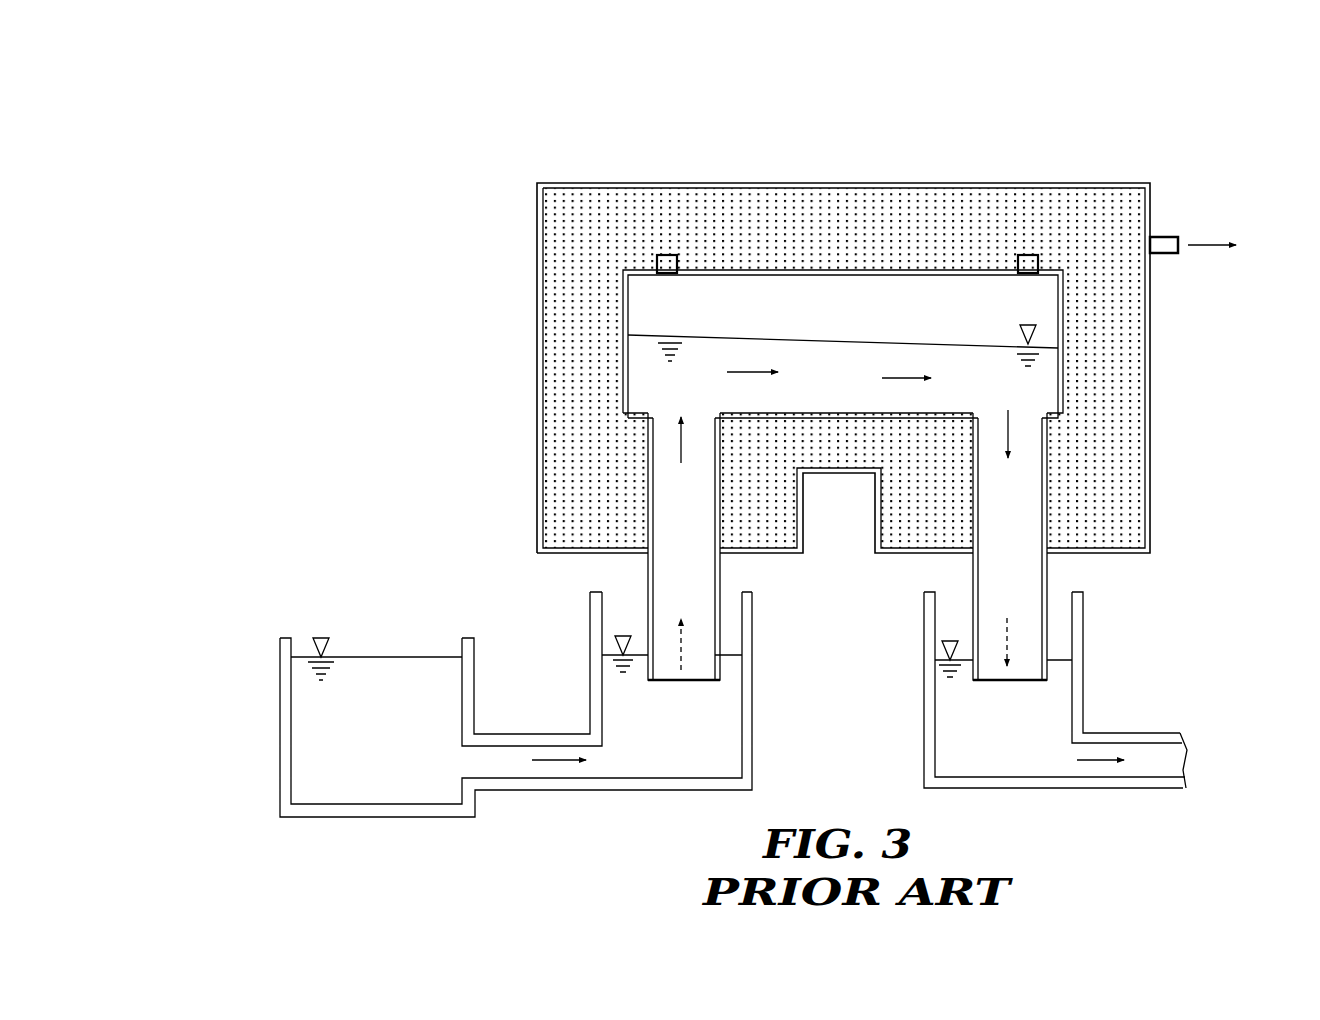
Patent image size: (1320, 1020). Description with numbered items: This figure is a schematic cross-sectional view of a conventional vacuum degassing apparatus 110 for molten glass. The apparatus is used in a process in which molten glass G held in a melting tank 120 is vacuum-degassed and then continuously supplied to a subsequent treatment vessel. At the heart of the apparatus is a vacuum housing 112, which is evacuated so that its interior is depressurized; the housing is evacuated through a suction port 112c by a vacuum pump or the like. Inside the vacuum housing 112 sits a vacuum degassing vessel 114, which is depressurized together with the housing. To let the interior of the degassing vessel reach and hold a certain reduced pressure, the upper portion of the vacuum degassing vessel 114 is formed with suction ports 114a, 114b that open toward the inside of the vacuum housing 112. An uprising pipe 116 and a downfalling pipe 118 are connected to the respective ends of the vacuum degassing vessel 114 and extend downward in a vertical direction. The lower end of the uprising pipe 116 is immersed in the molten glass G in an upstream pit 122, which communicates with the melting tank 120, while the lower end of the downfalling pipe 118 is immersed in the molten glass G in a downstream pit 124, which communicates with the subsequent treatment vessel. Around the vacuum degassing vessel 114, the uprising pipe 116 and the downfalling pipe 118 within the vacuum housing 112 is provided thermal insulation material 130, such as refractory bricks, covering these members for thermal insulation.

The vacuum degassing apparatus 110 is at (944, 108).
The vacuum housing 112 is at (722, 182).
The suction port 112c is at (1163, 238).
The vacuum degassing vessel 114 is at (782, 270).
The suction port 114a is at (663, 255).
The suction port 114b is at (1028, 255).
The uprising pipe 116 is at (717, 580).
The downfalling pipe 118 is at (1040, 510).
The melting tank 120 is at (280, 663).
The upstream pit 122 is at (747, 638).
The downstream pit 124 is at (1078, 638).
The thermal insulation material 130 is at (876, 228).
The molten glass G is at (932, 362).